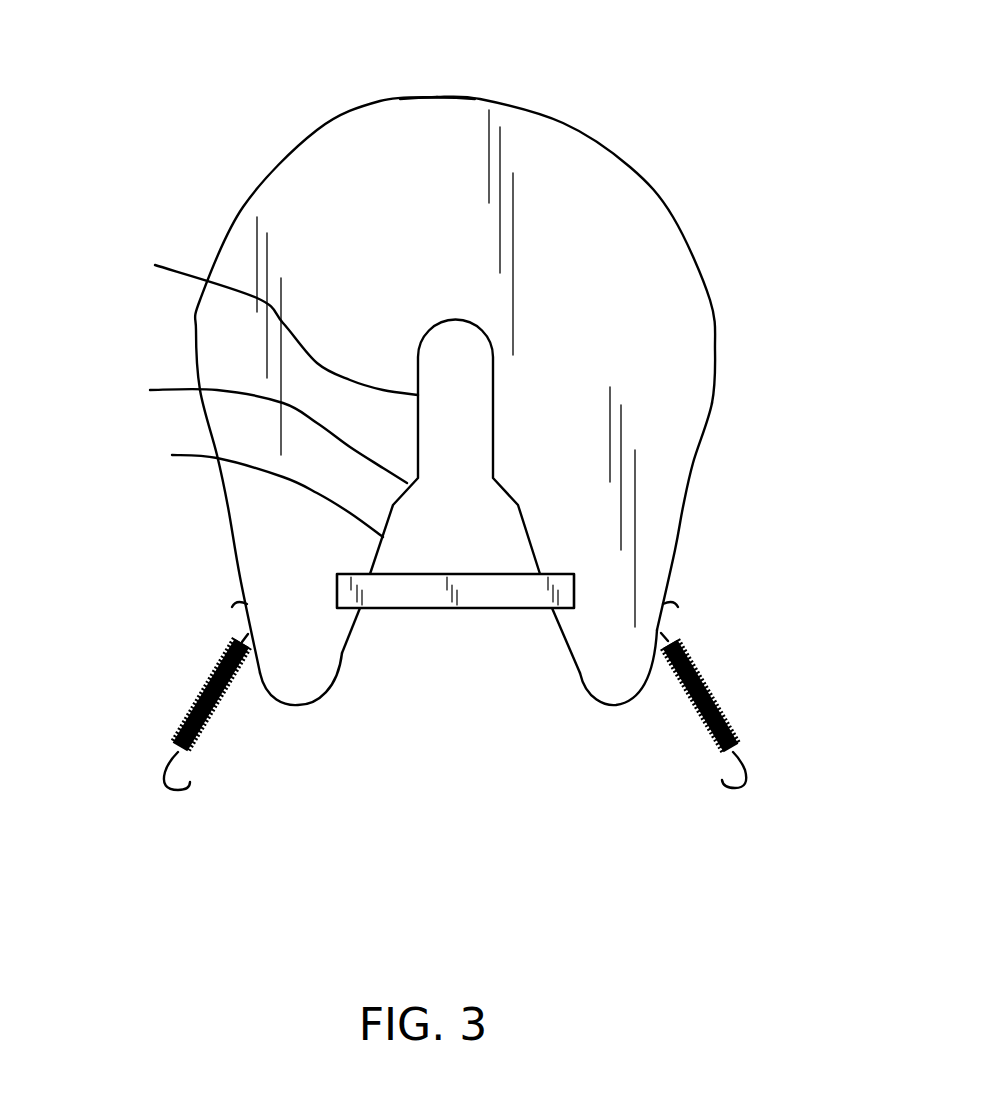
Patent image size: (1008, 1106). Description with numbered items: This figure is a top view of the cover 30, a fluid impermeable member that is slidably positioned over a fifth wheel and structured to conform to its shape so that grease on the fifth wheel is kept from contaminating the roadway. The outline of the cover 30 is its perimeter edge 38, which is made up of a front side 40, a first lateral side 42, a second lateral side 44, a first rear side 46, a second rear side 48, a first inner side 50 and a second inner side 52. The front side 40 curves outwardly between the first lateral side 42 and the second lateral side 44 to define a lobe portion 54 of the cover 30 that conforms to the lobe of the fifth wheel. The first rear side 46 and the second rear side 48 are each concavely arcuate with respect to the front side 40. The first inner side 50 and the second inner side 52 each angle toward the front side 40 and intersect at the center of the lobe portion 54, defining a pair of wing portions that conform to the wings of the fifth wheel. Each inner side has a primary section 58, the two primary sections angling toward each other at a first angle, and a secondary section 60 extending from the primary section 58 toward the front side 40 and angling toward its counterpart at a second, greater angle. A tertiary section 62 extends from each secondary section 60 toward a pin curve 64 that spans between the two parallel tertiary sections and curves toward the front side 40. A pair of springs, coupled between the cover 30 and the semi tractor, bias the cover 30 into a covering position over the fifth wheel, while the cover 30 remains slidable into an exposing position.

The cover 30 is at (640, 232).
The perimeter edge 38 is at (240, 208).
The front side 40 is at (440, 97).
The first lateral side 42 is at (230, 507).
The second lateral side 44 is at (682, 505).
The first rear side 46 is at (295, 703).
The second rear side 48 is at (618, 703).
The first inner side 50 is at (345, 650).
The second inner side 52 is at (563, 647).
The lobe portion 54 is at (367, 78).
The primary section 58 is at (254, 486).
The secondary section 60 is at (251, 427).
The tertiary section 62 is at (263, 320).
The pin curve 64 is at (455, 320).